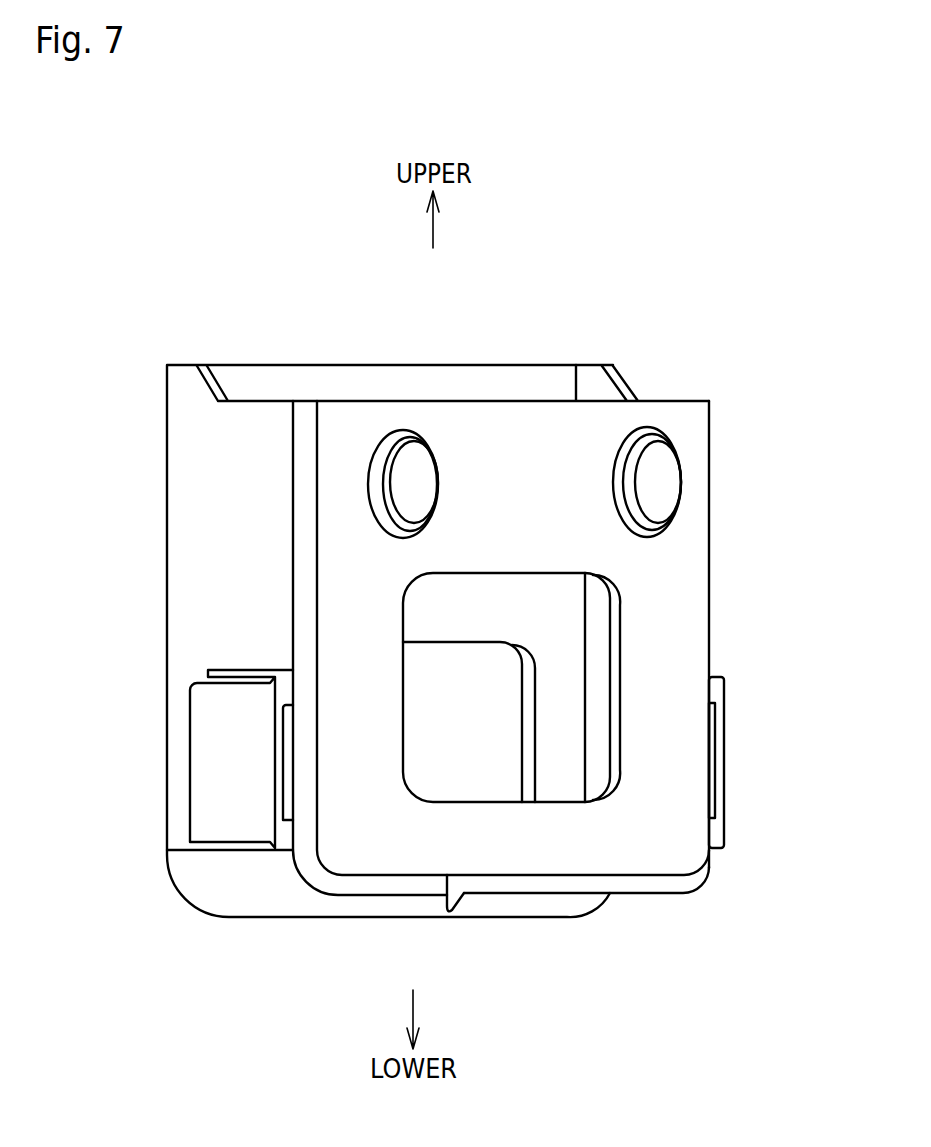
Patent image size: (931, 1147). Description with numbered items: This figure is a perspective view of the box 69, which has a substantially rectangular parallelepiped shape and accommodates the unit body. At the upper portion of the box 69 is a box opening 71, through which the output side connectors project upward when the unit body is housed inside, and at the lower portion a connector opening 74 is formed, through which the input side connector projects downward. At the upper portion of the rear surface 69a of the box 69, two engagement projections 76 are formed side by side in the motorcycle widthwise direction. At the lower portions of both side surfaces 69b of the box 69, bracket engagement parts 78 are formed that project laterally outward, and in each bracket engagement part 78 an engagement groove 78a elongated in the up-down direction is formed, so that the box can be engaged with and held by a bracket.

The box 69 is at (705, 371).
The rear surface 69a is at (688, 642).
The side surface 69b is at (182, 595).
The box opening 71 is at (528, 385).
The connector opening 74 is at (547, 876).
The engagement projection 76 is at (407, 473).
The bracket engagement part 78 is at (207, 752).
The engagement groove 78a is at (291, 782).